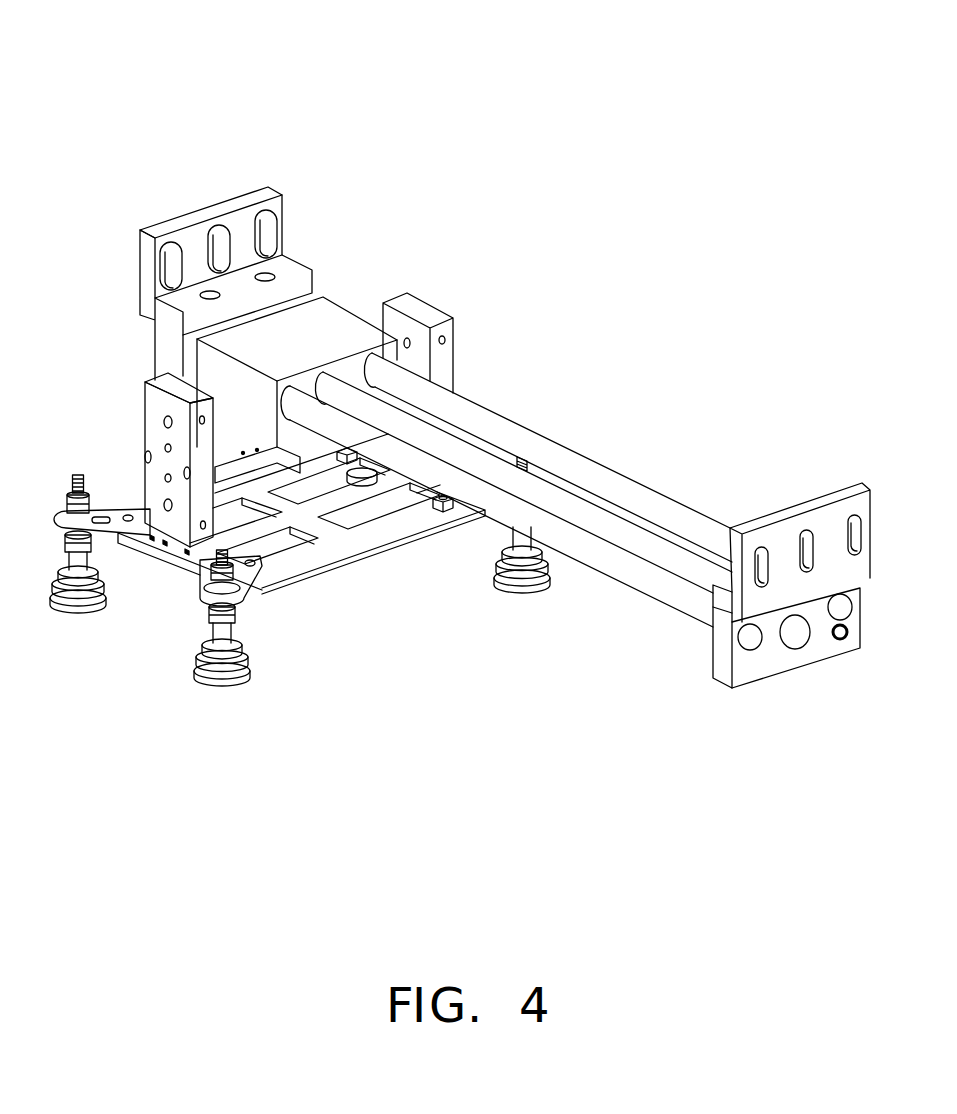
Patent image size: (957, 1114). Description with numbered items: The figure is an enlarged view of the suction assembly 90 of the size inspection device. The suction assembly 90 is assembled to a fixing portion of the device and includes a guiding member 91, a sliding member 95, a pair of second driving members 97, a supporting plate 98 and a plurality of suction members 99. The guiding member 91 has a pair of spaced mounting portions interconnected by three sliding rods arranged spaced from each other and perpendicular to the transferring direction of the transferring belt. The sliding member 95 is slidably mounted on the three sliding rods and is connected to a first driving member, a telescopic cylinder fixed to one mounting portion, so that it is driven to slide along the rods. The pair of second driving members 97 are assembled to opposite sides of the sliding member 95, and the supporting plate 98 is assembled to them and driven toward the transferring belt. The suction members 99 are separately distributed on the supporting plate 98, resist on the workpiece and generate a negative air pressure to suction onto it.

The suction assembly 90 is at (432, 82).
The guiding member 91 is at (477, 415).
The sliding member 95 is at (328, 323).
The second driving members 97 is at (150, 403).
The supporting plate 98 is at (343, 538).
The suction members 99 is at (223, 672).